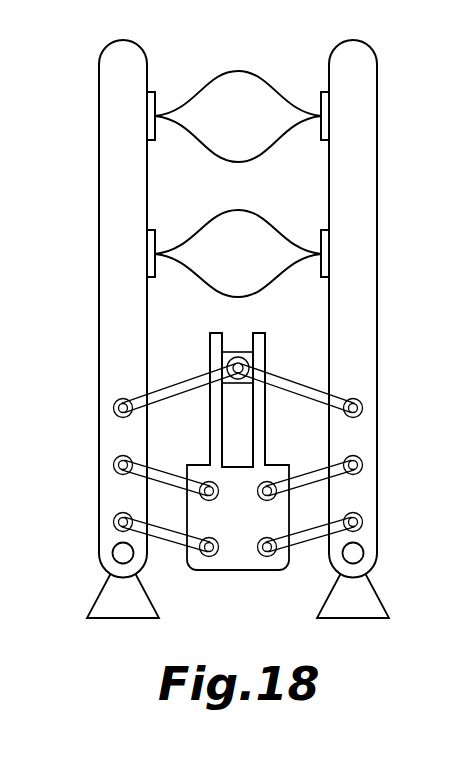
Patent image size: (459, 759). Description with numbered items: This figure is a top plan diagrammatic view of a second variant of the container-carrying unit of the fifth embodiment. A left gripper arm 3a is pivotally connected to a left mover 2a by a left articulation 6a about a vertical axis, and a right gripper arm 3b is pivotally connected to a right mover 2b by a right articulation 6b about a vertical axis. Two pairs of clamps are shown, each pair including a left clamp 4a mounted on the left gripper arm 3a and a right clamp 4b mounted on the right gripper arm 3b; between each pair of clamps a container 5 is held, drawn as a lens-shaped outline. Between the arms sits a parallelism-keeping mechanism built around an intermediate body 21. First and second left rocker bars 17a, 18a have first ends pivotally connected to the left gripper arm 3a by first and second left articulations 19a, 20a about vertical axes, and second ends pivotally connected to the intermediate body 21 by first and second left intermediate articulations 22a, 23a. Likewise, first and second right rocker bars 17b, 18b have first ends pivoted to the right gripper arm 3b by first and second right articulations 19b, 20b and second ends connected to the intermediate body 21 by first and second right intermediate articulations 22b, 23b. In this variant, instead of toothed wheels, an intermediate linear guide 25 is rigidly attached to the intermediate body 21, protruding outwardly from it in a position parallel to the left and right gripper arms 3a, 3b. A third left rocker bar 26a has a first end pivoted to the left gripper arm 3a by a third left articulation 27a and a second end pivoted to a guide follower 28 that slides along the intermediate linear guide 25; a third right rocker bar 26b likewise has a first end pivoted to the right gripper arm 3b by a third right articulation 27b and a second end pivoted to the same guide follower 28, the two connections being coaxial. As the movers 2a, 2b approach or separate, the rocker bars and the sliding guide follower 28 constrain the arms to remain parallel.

The left mover 2a is at (123, 612).
The right mover 2b is at (353, 612).
The left gripper arm 3a is at (110, 188).
The right gripper arm 3b is at (366, 188).
The left clamp 4a is at (152, 92).
The right clamp 4b is at (324, 92).
The membrane 5 is at (238, 69).
The left articulation 6a is at (122, 553).
The right articulation 6b is at (354, 553).
The first left rocker bar 17a is at (157, 470).
The first right rocker bar 17b is at (319, 470).
The second left rocker bar 18a is at (158, 530).
The second right rocker bar 18b is at (318, 530).
The first left articulation 19a is at (115, 457).
The first right articulation 19b is at (361, 457).
The second left articulation 20a is at (113, 519).
The second right articulation 20b is at (363, 519).
The intermediate body 21 is at (239, 563).
The first left intermediate articulation 22a is at (204, 481).
The first right intermediate articulation 22b is at (272, 481).
The second left intermediate articulation 23a is at (197, 570).
The second right intermediate articulation 23b is at (279, 570).
The intermediate linear guide 25 is at (217, 332).
The third left rocker bar 26a is at (187, 381).
The third right rocker bar 26b is at (289, 381).
The third left articulation 27a is at (118, 399).
The third right articulation 27b is at (358, 399).
The guide follower 28 is at (237, 356).